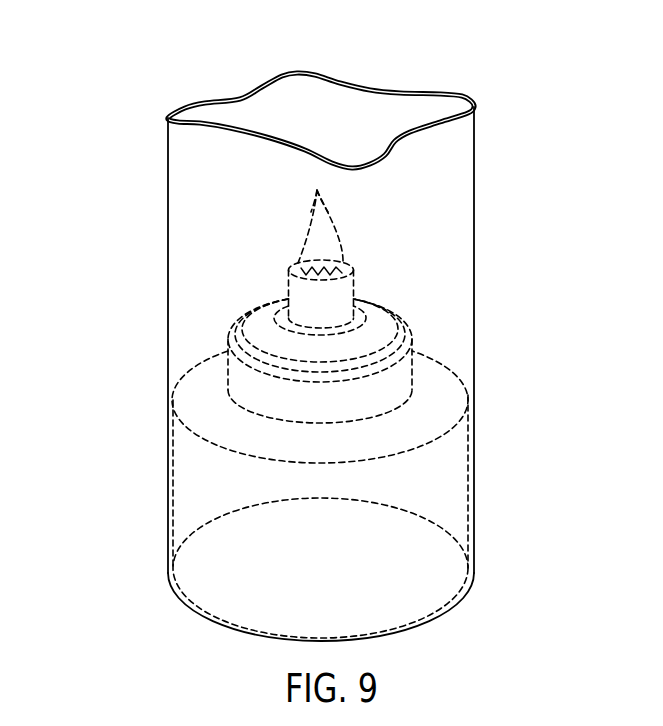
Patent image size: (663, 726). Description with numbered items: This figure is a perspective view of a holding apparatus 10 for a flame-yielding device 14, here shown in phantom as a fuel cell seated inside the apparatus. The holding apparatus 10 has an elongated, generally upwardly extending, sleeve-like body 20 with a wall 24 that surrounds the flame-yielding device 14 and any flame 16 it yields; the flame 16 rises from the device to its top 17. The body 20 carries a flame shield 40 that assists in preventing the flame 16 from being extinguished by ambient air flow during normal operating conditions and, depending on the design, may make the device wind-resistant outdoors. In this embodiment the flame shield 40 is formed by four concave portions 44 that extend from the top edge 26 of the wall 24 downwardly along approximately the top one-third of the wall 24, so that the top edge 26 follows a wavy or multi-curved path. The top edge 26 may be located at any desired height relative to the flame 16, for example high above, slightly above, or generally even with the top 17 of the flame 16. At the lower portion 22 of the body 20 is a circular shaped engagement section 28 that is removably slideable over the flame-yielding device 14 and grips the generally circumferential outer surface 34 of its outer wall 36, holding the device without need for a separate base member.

The holding apparatus 10 is at (582, 150).
The flame-yielding device 14 is at (459, 478).
The flame 16 is at (307, 233).
The top of the flame 17 is at (313, 186).
The body 20 is at (165, 200).
The lower portion 22 is at (133, 498).
The wall 24 is at (475, 330).
The top edge 26 is at (474, 102).
The engagement section 28 is at (153, 470).
The outer surface 34 is at (462, 522).
The outer wall 36 is at (465, 437).
The flame shield 40 is at (200, 205).
The concave portions 44 is at (225, 93).